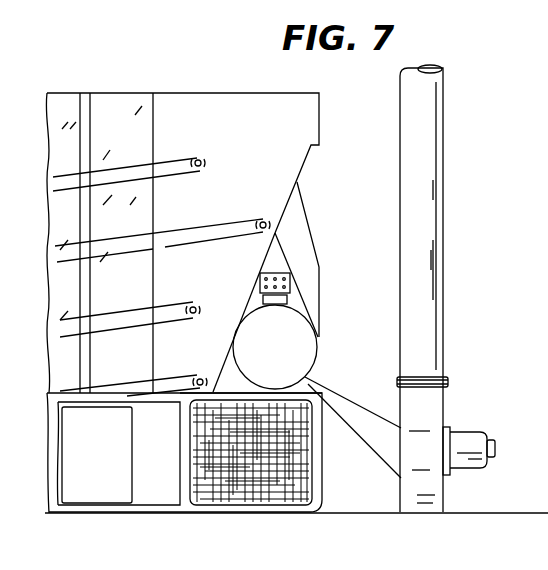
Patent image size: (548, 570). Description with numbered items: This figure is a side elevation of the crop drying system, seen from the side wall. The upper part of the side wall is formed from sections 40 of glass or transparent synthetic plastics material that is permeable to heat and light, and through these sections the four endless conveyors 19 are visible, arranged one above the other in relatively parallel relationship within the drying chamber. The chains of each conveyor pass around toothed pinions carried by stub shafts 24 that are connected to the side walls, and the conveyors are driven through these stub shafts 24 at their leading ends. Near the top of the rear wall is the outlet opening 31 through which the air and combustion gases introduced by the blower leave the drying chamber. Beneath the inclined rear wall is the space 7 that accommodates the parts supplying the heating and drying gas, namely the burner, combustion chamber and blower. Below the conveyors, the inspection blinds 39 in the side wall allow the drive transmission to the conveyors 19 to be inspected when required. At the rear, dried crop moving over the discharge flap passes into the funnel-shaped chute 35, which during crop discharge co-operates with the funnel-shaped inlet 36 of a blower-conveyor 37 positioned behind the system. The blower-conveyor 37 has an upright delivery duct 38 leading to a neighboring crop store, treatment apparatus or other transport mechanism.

The space 7 is at (190, 468).
The endless conveyors 19 is at (124, 163).
The stub shafts 24 is at (200, 167).
The outlet opening 31 is at (319, 112).
The funnel-shaped chute 35 is at (305, 250).
The funnel-shaped inlet 36 is at (354, 405).
The blower-conveyor 37 is at (414, 490).
The delivery duct 38 is at (425, 165).
The inspection blinds 39 is at (118, 465).
The sections 40 is at (60, 103).